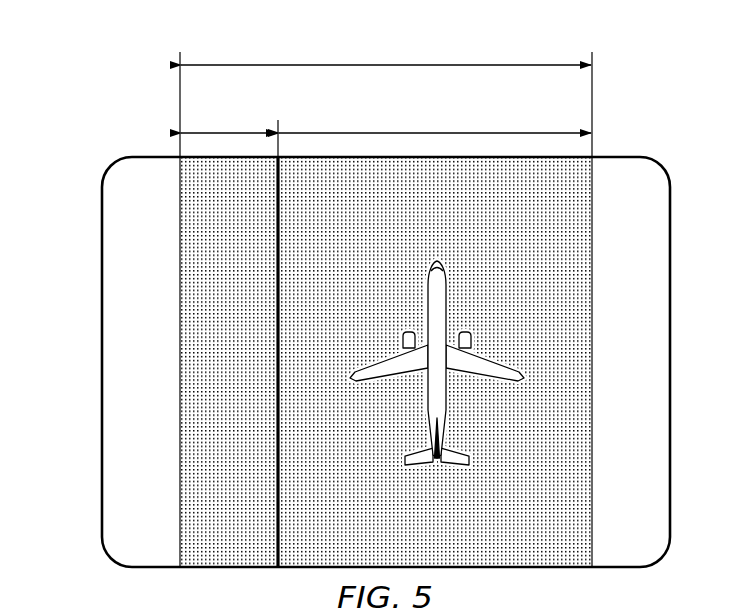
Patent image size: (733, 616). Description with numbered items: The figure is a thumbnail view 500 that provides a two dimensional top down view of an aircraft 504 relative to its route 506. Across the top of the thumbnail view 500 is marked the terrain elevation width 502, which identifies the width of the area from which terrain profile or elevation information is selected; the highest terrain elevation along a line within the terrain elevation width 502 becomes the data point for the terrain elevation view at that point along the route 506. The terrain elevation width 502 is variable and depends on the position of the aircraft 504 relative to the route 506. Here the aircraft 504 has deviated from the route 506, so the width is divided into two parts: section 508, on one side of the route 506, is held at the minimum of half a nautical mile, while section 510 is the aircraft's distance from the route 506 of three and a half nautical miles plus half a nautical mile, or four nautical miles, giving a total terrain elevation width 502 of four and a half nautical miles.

The thumbnail view 500 is at (100, 262).
The terrain elevation width 502 is at (268, 62).
The aircraft 504 is at (447, 306).
The route 506 is at (276, 275).
The section 508 is at (238, 131).
The section 510 is at (474, 131).